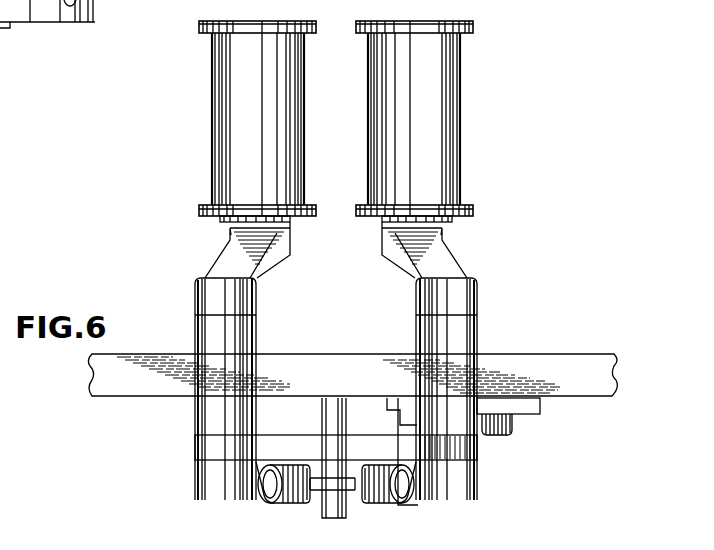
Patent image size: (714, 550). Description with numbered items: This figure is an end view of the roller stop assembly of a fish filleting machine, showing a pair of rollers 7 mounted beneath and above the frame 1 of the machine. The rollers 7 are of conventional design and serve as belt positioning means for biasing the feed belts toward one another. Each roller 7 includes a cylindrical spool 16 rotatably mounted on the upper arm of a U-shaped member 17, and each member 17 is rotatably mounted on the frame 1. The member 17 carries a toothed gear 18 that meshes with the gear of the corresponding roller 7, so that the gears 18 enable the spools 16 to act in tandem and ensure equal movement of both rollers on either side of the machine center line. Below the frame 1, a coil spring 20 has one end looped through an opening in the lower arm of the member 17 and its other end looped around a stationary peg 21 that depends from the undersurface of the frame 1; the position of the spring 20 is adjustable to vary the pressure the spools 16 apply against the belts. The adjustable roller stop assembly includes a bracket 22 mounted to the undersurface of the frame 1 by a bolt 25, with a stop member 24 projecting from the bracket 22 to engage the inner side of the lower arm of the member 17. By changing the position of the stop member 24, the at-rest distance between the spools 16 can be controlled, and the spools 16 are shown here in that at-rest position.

The frame 1 is at (556, 355).
The roller 7 is at (353, 156).
The cylindrical spool 16 is at (210, 98).
The U-shaped member 17 is at (197, 280).
The toothed gear 18 is at (197, 450).
The coil spring 20 is at (283, 505).
The stationary peg 21 is at (320, 418).
The bracket 22 is at (540, 412).
The stop member 24 is at (398, 425).
The bolt 25 is at (512, 433).